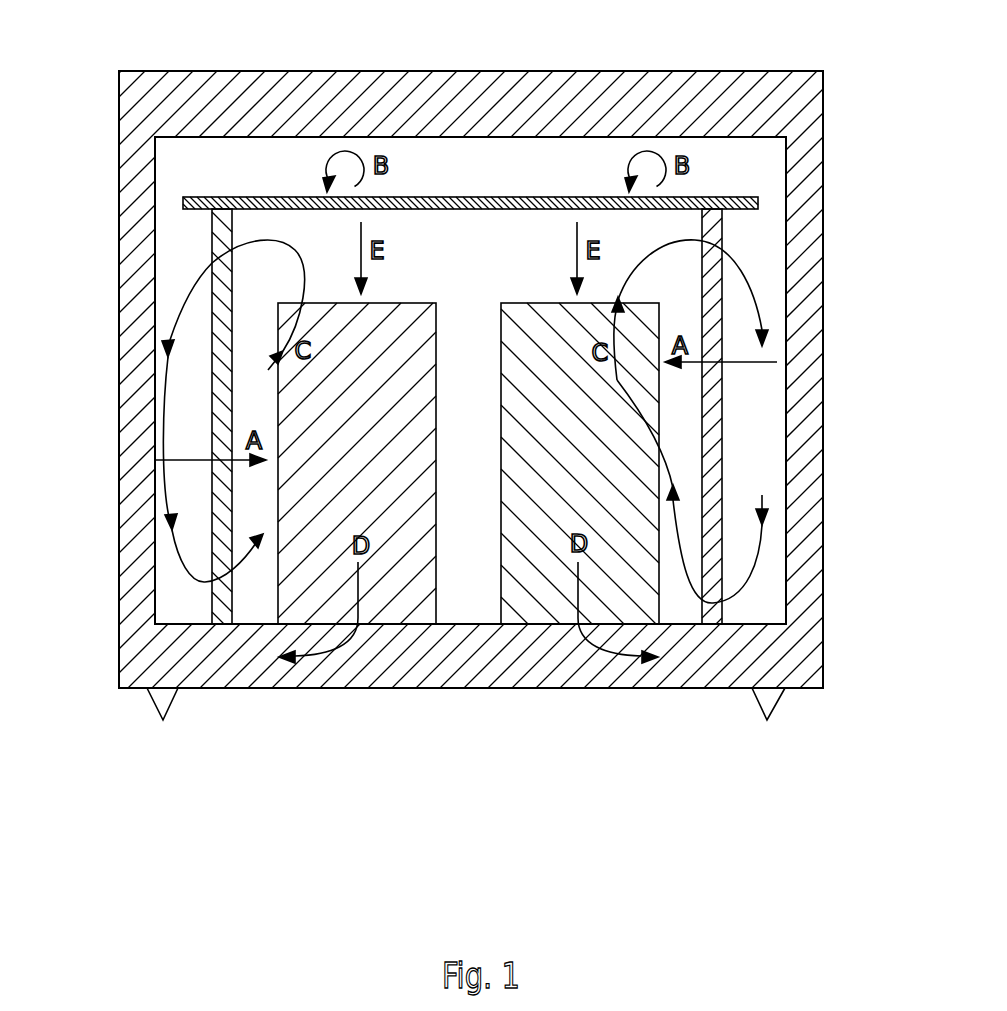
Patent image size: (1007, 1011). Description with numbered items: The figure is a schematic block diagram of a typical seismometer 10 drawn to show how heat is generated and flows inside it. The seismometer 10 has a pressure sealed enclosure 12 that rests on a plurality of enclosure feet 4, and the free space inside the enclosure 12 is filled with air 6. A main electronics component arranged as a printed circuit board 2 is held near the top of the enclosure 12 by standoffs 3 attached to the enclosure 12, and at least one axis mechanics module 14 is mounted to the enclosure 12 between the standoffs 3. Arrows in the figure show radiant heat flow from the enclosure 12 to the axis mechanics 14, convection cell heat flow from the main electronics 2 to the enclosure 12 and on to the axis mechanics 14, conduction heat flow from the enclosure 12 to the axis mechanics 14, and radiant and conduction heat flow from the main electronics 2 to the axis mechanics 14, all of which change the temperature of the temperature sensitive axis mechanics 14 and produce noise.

The printed circuit board 2 is at (550, 197).
The standoffs 3 is at (715, 230).
The enclosure feet 4 is at (153, 708).
The air 6 is at (470, 590).
The seismometer 10 is at (486, 443).
The pressure sealed enclosure 12 is at (815, 388).
The axis mechanics module 14 is at (537, 615).